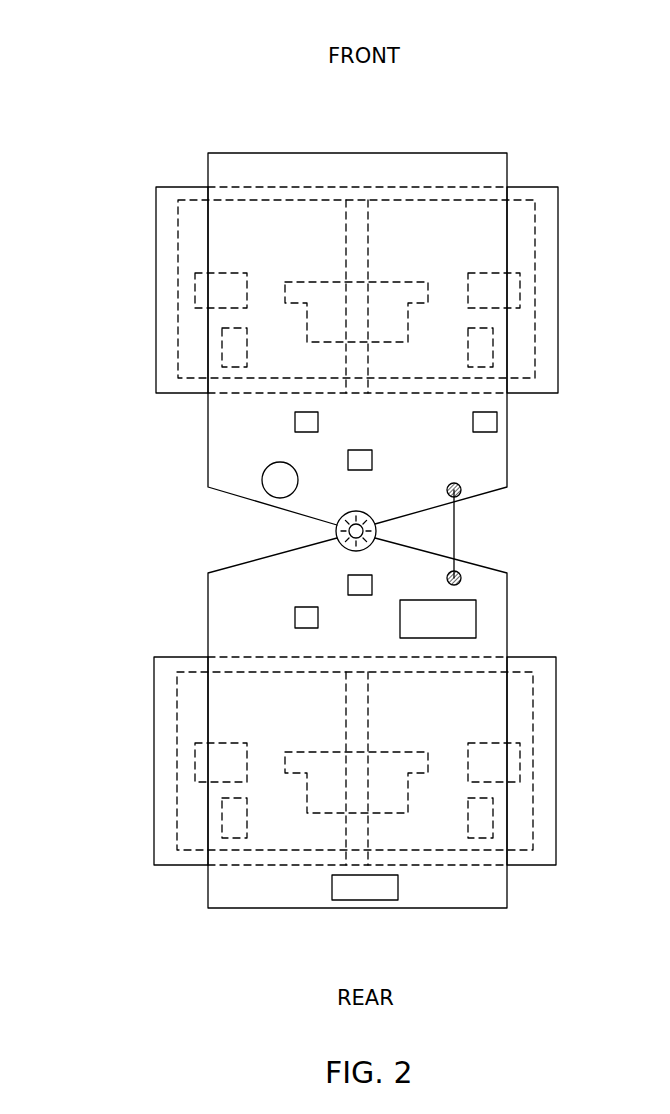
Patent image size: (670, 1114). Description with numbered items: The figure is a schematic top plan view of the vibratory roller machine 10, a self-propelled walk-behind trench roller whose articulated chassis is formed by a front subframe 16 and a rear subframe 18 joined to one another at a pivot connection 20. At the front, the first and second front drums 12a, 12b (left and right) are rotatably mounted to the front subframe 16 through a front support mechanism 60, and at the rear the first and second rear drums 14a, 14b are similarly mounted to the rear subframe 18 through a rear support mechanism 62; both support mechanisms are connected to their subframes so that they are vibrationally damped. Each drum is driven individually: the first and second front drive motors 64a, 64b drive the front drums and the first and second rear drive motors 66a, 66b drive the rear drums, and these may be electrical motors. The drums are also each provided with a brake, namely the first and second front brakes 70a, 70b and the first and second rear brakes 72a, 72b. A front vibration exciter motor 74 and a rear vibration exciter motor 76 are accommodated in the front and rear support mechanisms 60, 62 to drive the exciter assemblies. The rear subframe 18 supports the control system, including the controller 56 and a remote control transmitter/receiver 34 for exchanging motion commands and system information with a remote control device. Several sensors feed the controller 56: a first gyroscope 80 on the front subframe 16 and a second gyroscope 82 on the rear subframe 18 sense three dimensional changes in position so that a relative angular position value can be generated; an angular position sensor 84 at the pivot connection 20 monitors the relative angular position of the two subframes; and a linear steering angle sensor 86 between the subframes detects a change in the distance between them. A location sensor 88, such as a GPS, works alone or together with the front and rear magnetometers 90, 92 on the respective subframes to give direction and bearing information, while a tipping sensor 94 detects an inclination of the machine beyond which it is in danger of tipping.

The vibratory roller machine 10 is at (117, 75).
The first front drum 12a is at (156, 220).
The second front drum 12b is at (558, 205).
The first rear drum 14a is at (154, 685).
The second rear drum 14b is at (556, 685).
The front subframe 16 is at (480, 153).
The rear subframe 18 is at (467, 909).
The pivot connection 20 is at (336, 530).
The remote control transmitter/receiver 34 is at (370, 908).
The controller 56 is at (478, 610).
The front support mechanism 60 is at (535, 256).
The rear support mechanism 62 is at (533, 725).
The first front drive motor 64a is at (195, 293).
The second front drive motor 64b is at (520, 310).
The first rear drive motor 66a is at (195, 765).
The second rear drive motor 66b is at (520, 782).
The first front brake 70a is at (222, 367).
The second front brake 70b is at (493, 367).
The first rear brake 72a is at (222, 838).
The second rear brake 72b is at (493, 838).
The front vibration exciter motor 74 is at (403, 282).
The rear vibration exciter motor 76 is at (405, 813).
The first gyroscope 80 is at (372, 458).
The second gyroscope 82 is at (362, 575).
The angular position sensor 84 is at (360, 511).
The linear steering angle sensor 86 is at (455, 520).
The location sensor 88 is at (268, 470).
The front magnetometer 90 is at (295, 420).
The rear magnetometer 92 is at (295, 612).
The tipping sensor 94 is at (497, 415).